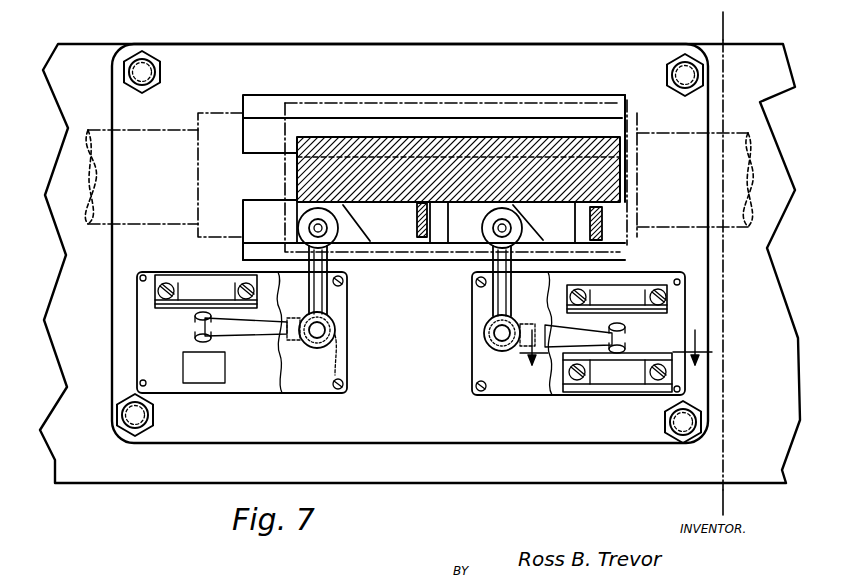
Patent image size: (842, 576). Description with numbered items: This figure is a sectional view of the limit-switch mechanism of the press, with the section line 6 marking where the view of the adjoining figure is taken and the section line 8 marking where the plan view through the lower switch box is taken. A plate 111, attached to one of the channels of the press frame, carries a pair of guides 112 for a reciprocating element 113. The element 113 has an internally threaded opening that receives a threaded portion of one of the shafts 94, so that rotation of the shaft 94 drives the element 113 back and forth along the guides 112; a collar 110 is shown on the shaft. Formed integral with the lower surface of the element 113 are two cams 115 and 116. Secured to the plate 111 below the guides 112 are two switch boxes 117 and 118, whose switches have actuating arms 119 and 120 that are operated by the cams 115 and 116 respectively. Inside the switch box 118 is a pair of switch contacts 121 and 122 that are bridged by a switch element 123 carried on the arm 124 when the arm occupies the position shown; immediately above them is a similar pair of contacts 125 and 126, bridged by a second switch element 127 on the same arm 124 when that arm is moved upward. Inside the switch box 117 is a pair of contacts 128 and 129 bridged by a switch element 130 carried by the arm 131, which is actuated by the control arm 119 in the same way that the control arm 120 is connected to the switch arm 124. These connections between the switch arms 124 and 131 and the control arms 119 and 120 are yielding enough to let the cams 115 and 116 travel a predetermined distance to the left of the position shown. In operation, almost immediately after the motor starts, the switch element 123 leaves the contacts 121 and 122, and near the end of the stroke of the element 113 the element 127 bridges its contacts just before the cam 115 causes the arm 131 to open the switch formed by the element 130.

The section line 6- 6 is at (700, 27).
The section line 8- 8 is at (616, 359).
The shaft 94 is at (153, 138).
The collar on shaft 110 is at (213, 130).
The plate 111 is at (423, 60).
The guides 112 is at (263, 143).
The reciprocating element 113 is at (457, 140).
The cam 115 is at (366, 242).
The cam 116 is at (537, 238).
The switch box 117 is at (347, 370).
The switch box 118 is at (537, 395).
The actuating arm 119 is at (327, 307).
The actuating arm 120 is at (493, 298).
The switch contact 121 is at (617, 389).
The switch contact 122 is at (650, 388).
The bridging switch element 123 is at (630, 347).
The switch arm 124 is at (596, 336).
The contact 125 is at (626, 281).
The contact 126 is at (654, 288).
The switch element 127 is at (627, 328).
The contact 128 is at (160, 308).
The contact 129 is at (202, 307).
The switch element 130 is at (200, 336).
The switch arm 131 is at (226, 338).